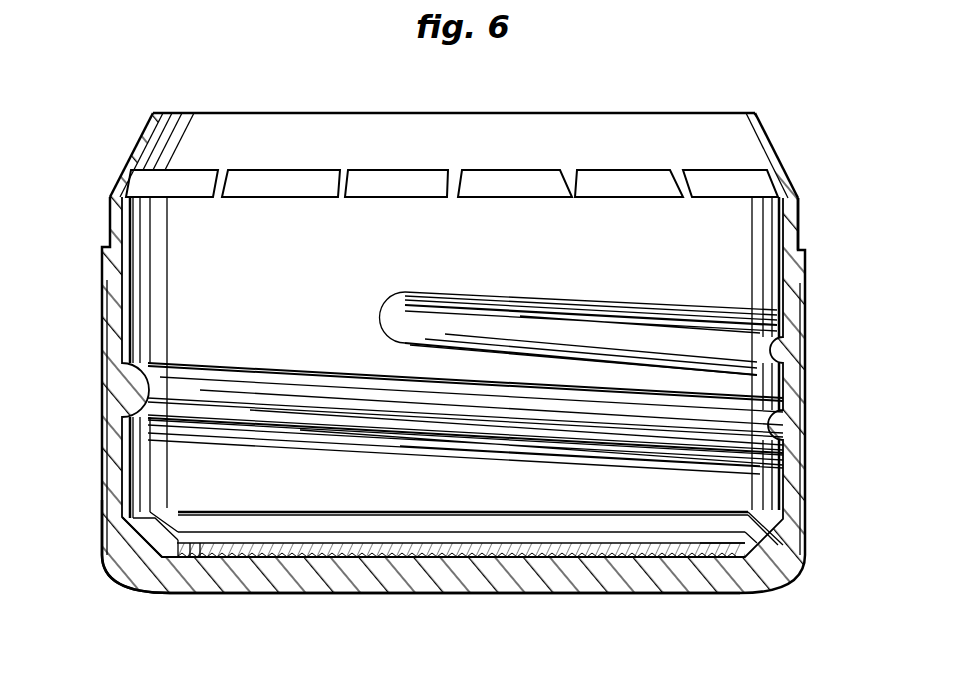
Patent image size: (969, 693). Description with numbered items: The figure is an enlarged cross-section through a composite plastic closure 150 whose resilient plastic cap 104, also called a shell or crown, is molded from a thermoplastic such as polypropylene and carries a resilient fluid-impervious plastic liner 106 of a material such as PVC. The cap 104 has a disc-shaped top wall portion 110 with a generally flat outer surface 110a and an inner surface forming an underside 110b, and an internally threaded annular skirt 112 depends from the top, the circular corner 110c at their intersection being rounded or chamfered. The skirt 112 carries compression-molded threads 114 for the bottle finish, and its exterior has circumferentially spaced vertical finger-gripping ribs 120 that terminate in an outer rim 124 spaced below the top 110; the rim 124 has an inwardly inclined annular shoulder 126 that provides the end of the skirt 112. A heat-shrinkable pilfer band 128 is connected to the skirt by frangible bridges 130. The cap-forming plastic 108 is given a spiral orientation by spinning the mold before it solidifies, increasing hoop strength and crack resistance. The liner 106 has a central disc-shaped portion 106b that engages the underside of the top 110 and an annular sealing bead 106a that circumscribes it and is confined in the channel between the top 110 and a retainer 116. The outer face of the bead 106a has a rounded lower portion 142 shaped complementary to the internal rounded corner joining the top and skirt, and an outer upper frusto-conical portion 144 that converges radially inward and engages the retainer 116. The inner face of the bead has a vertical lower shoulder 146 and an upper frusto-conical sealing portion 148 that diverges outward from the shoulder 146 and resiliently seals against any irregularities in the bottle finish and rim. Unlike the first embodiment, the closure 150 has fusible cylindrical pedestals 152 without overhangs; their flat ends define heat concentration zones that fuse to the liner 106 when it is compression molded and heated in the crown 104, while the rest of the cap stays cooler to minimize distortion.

The plastic cap 104 is at (769, 588).
The plastic liner 106 is at (357, 557).
The annular sealing bead 106a is at (750, 512).
The disc-shaped portion 106b is at (553, 543).
The cap-forming plastic 108 is at (790, 420).
The top wall portion 110 is at (500, 580).
The outer surface 110a is at (300, 597).
The underside 110b is at (175, 558).
The corner 110c is at (140, 593).
The skirt 112 is at (110, 337).
The threads 114 is at (758, 352).
The retainer 116 is at (153, 518).
The finger-gripping ribs 120 is at (803, 318).
The outer rim 124 is at (800, 229).
The annular shoulder 126 is at (790, 190).
The pilfer band 128 is at (768, 134).
The frangible bridges 130 is at (367, 172).
The rounded lower portion 142 is at (138, 558).
The outer upper frusto-conical portion 144 is at (140, 520).
The shoulder 146 is at (212, 560).
The upper frusto-conical sealing portion 148 is at (688, 553).
The composite plastic closure 150 is at (675, 60).
The fusible cylindrical pedestals 152 is at (540, 553).